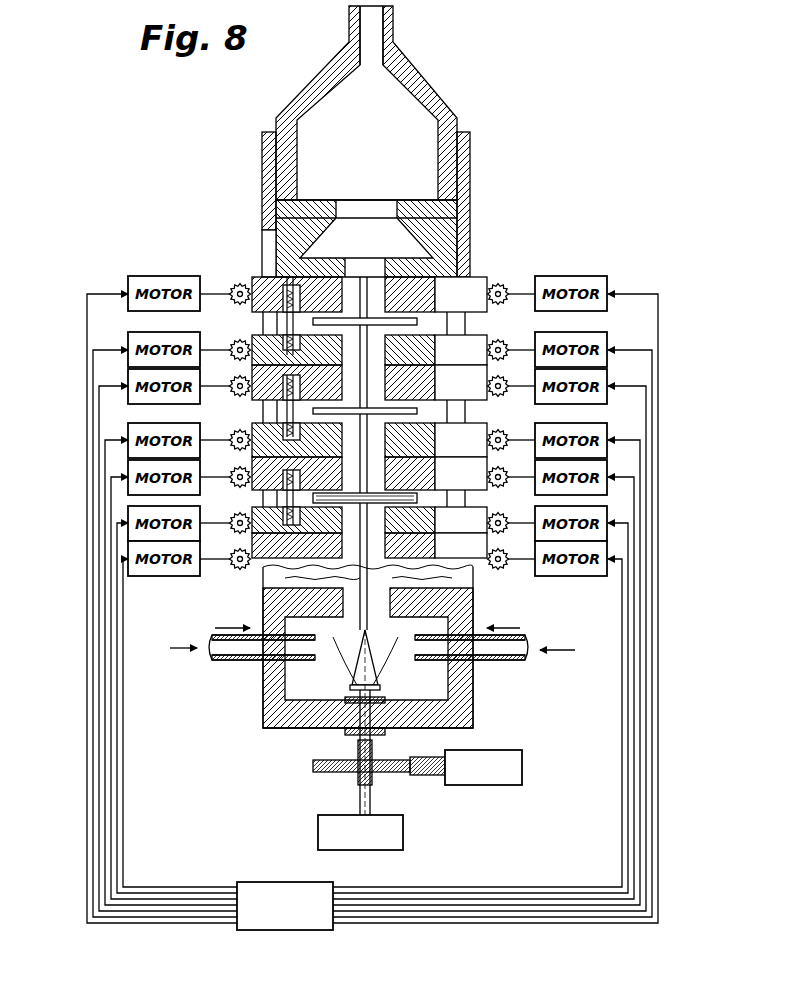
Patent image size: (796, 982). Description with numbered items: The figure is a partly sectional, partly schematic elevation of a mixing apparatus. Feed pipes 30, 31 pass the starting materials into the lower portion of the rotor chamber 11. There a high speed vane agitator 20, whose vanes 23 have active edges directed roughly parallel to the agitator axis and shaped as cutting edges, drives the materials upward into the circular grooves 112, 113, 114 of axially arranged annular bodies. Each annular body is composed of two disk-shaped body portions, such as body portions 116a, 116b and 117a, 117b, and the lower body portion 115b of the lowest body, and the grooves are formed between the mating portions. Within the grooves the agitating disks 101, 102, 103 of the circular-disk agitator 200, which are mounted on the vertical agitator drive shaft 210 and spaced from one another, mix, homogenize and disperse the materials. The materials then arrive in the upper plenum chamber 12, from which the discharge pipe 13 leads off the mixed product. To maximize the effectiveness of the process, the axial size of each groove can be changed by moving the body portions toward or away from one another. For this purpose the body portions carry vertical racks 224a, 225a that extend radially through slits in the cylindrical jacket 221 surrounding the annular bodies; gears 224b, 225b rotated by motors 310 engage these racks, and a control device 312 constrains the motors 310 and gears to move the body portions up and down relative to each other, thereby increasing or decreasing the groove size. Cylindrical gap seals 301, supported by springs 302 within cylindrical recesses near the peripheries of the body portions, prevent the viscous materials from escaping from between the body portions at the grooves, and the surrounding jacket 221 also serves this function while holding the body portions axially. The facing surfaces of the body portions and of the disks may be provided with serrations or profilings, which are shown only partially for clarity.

The rotor chamber 11 is at (440, 688).
The upper plenum chamber 12 is at (413, 128).
The discharge pipe 13 is at (372, 32).
The vane agitator 20 is at (380, 660).
The vanes 23 is at (372, 660).
The feed pipe 30 is at (258, 650).
The feed pipe 31 is at (490, 652).
The agitating disk 101 is at (370, 498).
The agitating disk 102 is at (374, 412).
The agitating disk 103 is at (382, 322).
The circular groove 112 is at (365, 514).
The circular groove 113 is at (365, 424).
The circular groove 114 is at (365, 332).
The body portion 115b is at (252, 496).
The body portion 116a is at (226, 437).
The body portion 116b is at (252, 402).
The body portion 117a is at (226, 347).
The body portion 117b is at (252, 318).
The circular-disk agitator 200 is at (380, 603).
The agitator drive shaft 210 is at (370, 805).
The cylindrical jacket 221 is at (463, 200).
The vertical rack 224a is at (248, 276).
The gear 224b is at (236, 284).
The vertical rack 225a is at (514, 337).
The gear 225b is at (488, 386).
The cylindrical gap seal 301 is at (437, 325).
The spring 302 is at (296, 296).
The motor 310 is at (128, 280).
The control device 312 is at (315, 930).